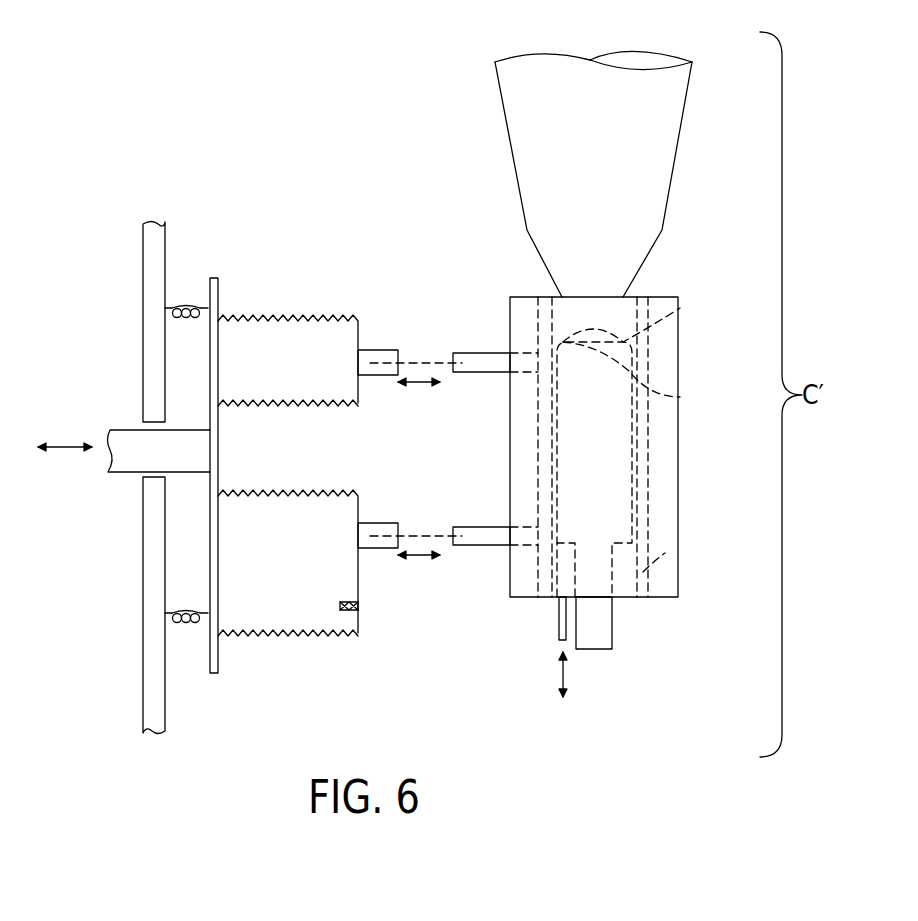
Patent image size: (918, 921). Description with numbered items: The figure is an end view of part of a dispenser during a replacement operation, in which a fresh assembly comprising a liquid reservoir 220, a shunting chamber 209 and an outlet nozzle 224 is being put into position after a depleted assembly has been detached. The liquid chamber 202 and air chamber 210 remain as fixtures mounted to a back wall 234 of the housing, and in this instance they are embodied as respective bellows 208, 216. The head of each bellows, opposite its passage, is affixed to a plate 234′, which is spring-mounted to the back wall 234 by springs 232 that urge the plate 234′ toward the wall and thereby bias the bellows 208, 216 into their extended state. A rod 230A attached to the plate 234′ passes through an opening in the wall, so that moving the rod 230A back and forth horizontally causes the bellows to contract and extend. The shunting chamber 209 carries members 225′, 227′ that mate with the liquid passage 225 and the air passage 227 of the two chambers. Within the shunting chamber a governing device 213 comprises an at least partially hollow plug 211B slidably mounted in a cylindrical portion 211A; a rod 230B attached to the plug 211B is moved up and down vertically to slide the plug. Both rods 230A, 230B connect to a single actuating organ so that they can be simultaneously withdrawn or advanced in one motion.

The liquid chamber 202 is at (310, 337).
The bellows 208 is at (232, 406).
The shunting chamber 209 is at (668, 463).
The air chamber 210 is at (280, 615).
The cylindrical portion 211A is at (665, 553).
The plug 211B is at (680, 397).
The governing device 213 is at (680, 308).
The bellows 216 is at (238, 637).
The liquid reservoir 220 is at (658, 156).
The outlet nozzle 224 is at (600, 615).
The liquid passage 225 is at (368, 370).
The mating member 225′ is at (481, 362).
The air passage 227 is at (367, 532).
The mating member 227′ is at (478, 540).
The rod 230A is at (128, 460).
The rod 230B is at (557, 624).
The springs 232 is at (182, 304).
The back wall 234 is at (153, 253).
The plate 234′ is at (217, 291).